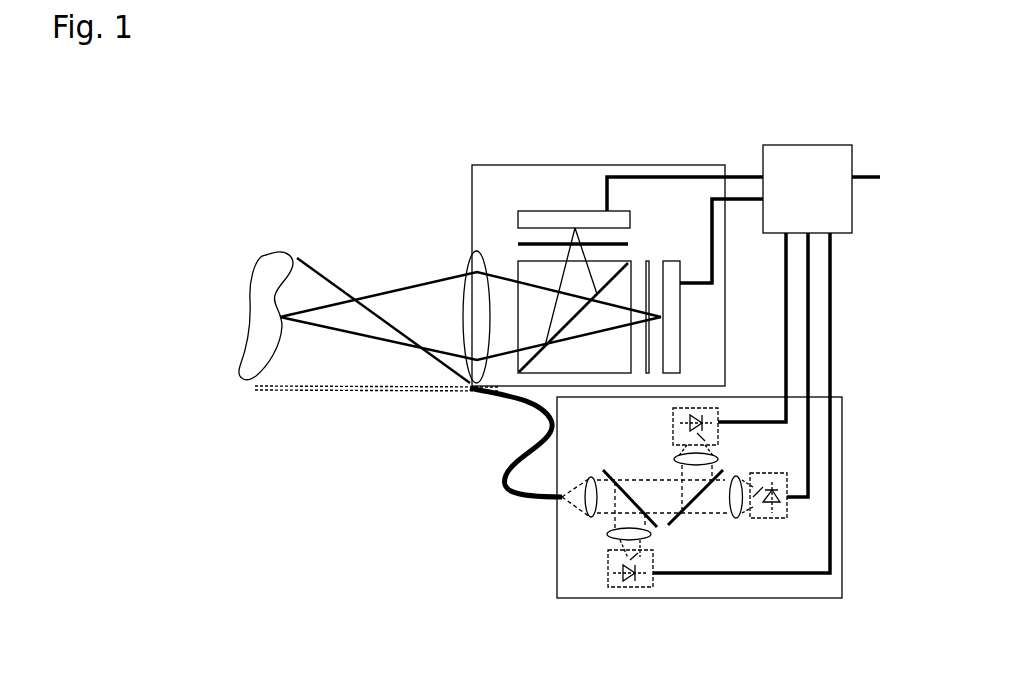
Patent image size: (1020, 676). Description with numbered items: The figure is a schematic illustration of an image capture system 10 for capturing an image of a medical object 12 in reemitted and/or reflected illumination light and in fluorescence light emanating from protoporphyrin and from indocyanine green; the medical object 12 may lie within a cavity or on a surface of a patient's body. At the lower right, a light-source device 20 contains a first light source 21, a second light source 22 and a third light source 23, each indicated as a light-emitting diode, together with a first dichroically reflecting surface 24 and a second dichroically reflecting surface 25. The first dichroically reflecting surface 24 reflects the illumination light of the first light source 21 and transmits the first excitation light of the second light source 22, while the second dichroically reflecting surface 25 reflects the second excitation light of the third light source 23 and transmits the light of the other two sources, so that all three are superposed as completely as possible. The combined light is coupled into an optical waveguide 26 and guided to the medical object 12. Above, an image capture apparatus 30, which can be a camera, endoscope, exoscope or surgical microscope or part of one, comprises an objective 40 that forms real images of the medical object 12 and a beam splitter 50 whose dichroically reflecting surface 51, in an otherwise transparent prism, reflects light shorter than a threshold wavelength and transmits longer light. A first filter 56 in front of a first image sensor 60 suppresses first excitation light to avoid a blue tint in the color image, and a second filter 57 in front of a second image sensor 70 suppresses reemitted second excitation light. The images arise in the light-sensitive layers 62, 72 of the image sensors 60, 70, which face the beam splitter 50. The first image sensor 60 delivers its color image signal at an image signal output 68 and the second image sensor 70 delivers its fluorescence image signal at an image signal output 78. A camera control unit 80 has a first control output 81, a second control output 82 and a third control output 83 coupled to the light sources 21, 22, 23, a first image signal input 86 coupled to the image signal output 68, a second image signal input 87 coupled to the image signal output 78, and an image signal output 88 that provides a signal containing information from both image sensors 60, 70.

The image capture system 10 is at (307, 66).
The medical object 12 is at (272, 255).
The light-source device 20 is at (560, 579).
The first light source 21 is at (718, 431).
The second light source 22 is at (787, 507).
The third light source 23 is at (608, 555).
The first dichroically reflecting surface 24 is at (677, 517).
The second dichroically reflecting surface 25 is at (603, 470).
The optical waveguide 26 is at (543, 422).
The image capture apparatus 30 is at (472, 167).
The objective 40 is at (474, 253).
The beam splitter 50 is at (648, 267).
The dichroically reflecting surface 51 is at (628, 277).
The first filter 56 is at (630, 262).
The second filter 57 is at (658, 263).
The first image sensor 60 is at (555, 213).
The light-sensitive layer 62 is at (535, 232).
The image signal output 68 is at (607, 210).
The second image sensor 70 is at (680, 333).
The light-sensitive layer 72 is at (660, 355).
The image signal output 78 is at (681, 286).
The camera control unit 80 is at (852, 153).
The first control output 81 is at (790, 237).
The second control output 82 is at (810, 237).
The third control output 83 is at (833, 235).
The first image signal input 86 is at (733, 177).
The second image signal input 87 is at (762, 199).
The image signal output 88 is at (857, 188).